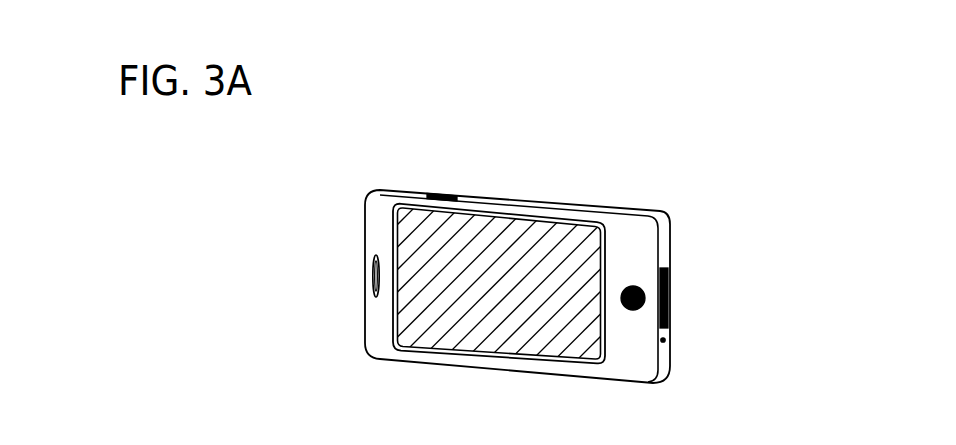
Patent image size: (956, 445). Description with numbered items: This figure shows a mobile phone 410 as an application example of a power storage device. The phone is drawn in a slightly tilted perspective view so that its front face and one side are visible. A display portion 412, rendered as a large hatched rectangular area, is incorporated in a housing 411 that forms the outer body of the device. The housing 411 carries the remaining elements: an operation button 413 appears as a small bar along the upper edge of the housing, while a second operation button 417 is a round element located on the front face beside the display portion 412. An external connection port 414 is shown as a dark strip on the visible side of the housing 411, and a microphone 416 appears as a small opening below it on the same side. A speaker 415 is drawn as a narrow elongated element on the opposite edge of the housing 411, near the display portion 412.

The mobile phone 410 is at (603, 170).
The housing 411 is at (627, 363).
The display portion 412 is at (408, 248).
The operation button 413 is at (447, 195).
The external connection port 414 is at (669, 293).
The speaker 415 is at (372, 283).
The microphone 416 is at (665, 344).
The operation button 417 is at (636, 287).